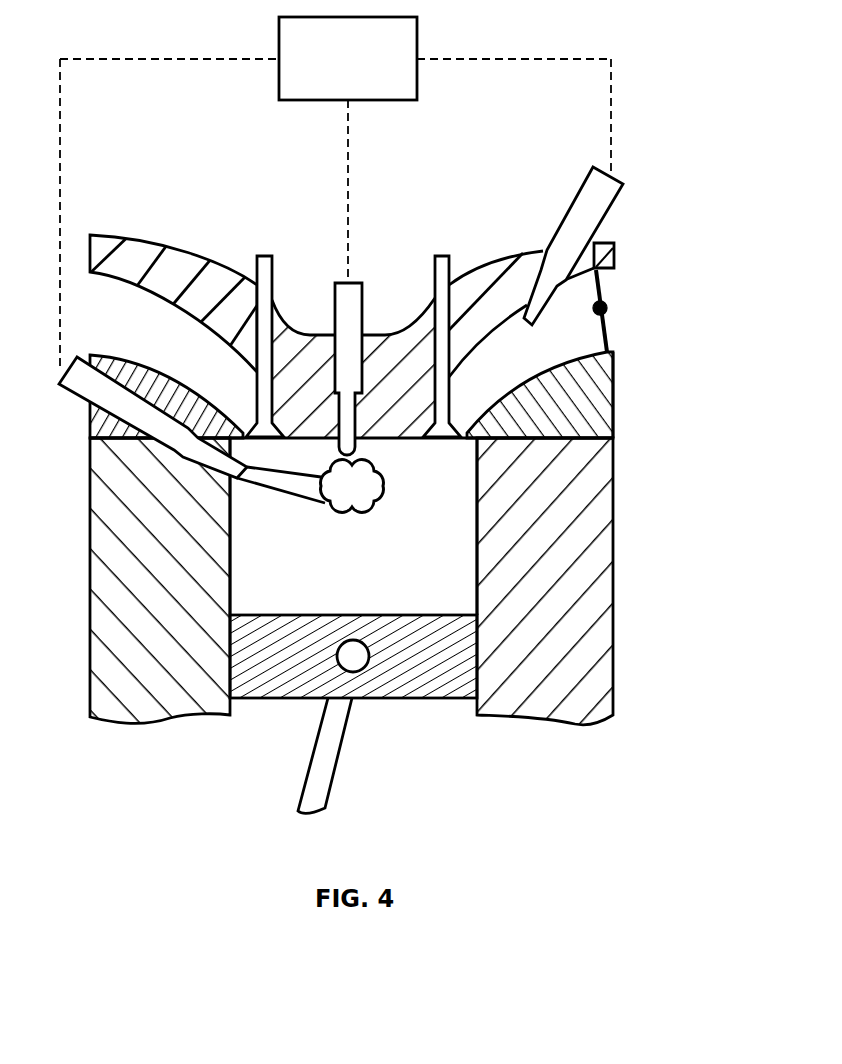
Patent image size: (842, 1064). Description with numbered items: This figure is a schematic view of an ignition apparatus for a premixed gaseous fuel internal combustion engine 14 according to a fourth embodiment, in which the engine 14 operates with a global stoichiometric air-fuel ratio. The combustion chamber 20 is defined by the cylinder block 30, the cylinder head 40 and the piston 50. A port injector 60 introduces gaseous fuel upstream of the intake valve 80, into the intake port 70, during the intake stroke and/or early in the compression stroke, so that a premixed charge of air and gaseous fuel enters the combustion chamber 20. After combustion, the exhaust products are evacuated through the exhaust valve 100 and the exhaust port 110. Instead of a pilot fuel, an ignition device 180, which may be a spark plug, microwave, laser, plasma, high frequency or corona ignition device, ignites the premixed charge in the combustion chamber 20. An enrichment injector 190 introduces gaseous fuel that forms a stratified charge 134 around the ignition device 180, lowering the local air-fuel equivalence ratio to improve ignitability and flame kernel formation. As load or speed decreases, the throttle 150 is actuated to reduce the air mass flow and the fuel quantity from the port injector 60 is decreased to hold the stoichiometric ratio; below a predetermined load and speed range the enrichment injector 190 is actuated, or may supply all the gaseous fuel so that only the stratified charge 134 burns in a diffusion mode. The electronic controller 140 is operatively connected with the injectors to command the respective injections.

The internal combustion engine 14 is at (668, 106).
The combustion chamber 20 is at (337, 556).
The cylinder block 30 is at (143, 548).
The cylinder head 40 is at (575, 410).
The piston 50 is at (423, 670).
The port injector 60 is at (606, 214).
The intake port 70 is at (550, 343).
The intake valve 80 is at (434, 273).
The exhaust valve 100 is at (256, 263).
The exhaust port 110 is at (124, 338).
The stratified charge 134 is at (335, 497).
The electronic controller 140 is at (329, 70).
The throttle 150 is at (608, 337).
The ignition device 180 is at (334, 310).
The enrichment injector 190 is at (80, 398).